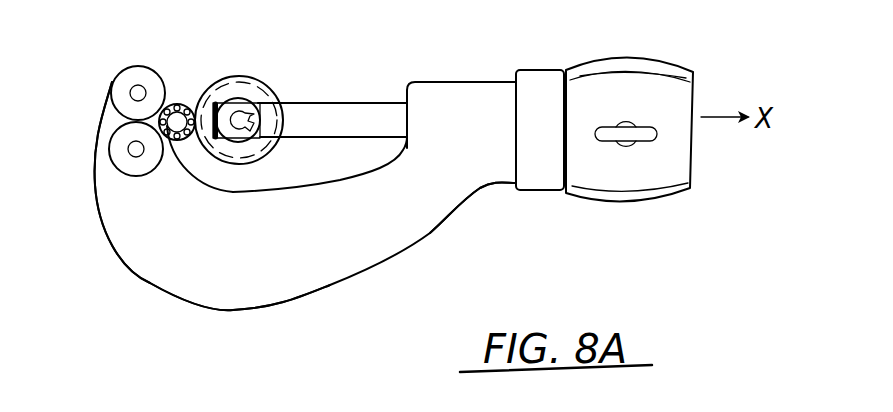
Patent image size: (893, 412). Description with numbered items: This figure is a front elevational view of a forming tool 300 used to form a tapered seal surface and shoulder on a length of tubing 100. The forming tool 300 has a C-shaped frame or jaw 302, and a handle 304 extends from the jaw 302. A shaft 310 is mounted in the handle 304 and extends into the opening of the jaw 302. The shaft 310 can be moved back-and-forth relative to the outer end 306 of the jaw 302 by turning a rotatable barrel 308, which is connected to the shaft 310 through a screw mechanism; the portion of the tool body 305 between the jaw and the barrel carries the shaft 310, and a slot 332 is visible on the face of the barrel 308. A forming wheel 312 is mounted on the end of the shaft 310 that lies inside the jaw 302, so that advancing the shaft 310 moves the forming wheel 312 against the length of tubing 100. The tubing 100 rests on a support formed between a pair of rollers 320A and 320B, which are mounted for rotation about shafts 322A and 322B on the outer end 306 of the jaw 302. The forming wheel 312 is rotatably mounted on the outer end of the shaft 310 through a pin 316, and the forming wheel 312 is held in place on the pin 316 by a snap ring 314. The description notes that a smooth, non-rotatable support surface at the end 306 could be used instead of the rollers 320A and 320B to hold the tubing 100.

The forming tool 300 is at (516, 51).
The C-shaped frame or jaw 302 is at (331, 293).
The handle 304 is at (485, 201).
The body 305 is at (402, 82).
The outer end 306 is at (83, 173).
The rotatable barrel 308 is at (656, 51).
The shaft 310 is at (325, 100).
The forming wheel 312 is at (239, 70).
The snap ring 314 is at (251, 137).
The pin 316 is at (204, 183).
The length of tubing 100 is at (165, 133).
The roller 320A is at (118, 82).
The roller 320B is at (110, 146).
The shaft 322A is at (139, 91).
The shaft 322B is at (136, 151).
The slot 332 is at (653, 142).